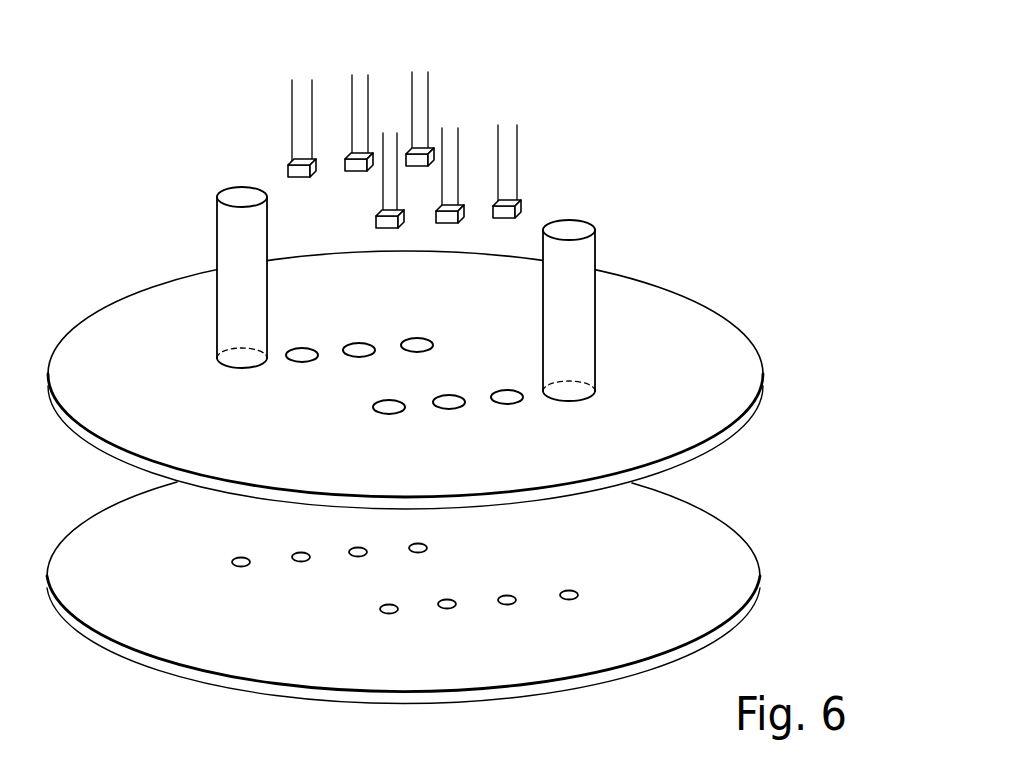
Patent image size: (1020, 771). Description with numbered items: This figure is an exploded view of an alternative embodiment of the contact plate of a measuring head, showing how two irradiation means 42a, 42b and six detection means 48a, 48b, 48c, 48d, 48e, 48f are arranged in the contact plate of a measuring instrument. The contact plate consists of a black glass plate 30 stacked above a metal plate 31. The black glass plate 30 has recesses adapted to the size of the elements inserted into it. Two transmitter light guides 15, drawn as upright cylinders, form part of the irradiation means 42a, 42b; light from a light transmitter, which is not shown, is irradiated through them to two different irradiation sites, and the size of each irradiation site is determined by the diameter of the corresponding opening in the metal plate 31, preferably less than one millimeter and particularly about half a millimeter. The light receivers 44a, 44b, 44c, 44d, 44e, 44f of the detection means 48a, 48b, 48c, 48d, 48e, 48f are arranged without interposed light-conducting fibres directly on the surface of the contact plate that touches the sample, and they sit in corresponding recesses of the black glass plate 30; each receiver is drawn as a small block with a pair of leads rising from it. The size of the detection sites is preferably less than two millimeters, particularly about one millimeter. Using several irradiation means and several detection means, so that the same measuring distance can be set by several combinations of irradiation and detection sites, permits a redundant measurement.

The transmitter light guides 15 is at (232, 228).
The black glass plate 30 is at (110, 450).
The metal plate 31 is at (108, 648).
The irradiation means 42a is at (213, 306).
The irradiation means 42b is at (597, 323).
The light receiver 44a is at (289, 171).
The light receiver 44b is at (360, 168).
The light receiver 44c is at (423, 166).
The light receiver 44d is at (388, 228).
The light receiver 44e is at (454, 223).
The light receiver 44f is at (519, 212).
The detection means 48a is at (301, 86).
The detection means 48b is at (358, 86).
The detection means 48c is at (421, 65).
The detection means 48d is at (390, 126).
The detection means 48e is at (449, 126).
The detection means 48f is at (509, 125).